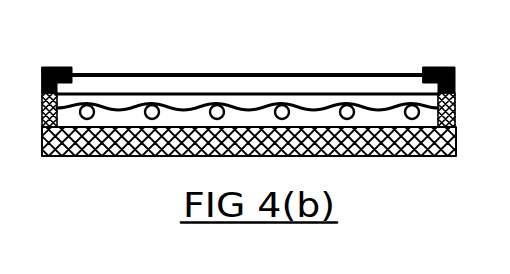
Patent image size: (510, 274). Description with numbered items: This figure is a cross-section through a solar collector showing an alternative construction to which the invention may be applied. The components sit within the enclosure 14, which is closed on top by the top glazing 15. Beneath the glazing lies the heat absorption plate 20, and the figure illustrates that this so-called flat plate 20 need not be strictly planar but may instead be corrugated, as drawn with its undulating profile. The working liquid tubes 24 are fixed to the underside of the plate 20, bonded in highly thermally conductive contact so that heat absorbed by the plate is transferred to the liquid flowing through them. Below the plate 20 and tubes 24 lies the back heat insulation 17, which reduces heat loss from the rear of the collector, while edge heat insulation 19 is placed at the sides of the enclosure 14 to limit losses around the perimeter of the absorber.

The enclosure 14 is at (456, 128).
The top glazing 15 is at (317, 75).
The back heat insulation 17 is at (426, 156).
The edge heat insulation 19 is at (460, 102).
The heat absorption plate 20 is at (180, 104).
The tubes 24 is at (146, 112).